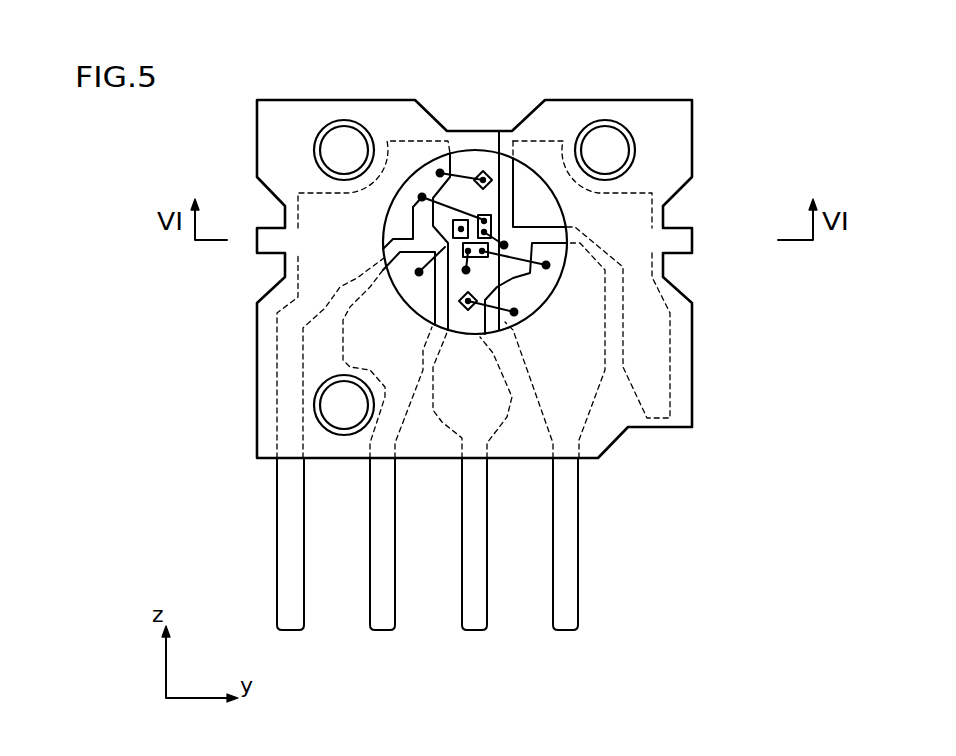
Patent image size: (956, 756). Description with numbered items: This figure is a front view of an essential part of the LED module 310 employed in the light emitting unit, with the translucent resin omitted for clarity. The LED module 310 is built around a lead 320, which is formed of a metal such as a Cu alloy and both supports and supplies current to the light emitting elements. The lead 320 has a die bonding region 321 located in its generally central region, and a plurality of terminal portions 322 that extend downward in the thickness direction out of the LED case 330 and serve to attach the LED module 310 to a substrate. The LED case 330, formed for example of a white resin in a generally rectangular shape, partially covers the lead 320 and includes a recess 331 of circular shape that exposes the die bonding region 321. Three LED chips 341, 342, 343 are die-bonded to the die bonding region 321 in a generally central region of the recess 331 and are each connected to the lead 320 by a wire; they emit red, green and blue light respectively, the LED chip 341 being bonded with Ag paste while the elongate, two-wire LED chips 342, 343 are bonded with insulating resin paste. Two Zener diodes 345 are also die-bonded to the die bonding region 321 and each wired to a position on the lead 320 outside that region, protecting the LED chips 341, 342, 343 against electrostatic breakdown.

The LED module 310 is at (258, 94).
The lead 320 is at (656, 286).
The die bonding region 321 is at (493, 272).
The terminal portions 322 is at (565, 613).
The LED case 330 is at (618, 108).
The recess 331 is at (420, 183).
The LED chip 341 is at (460, 224).
The LED chip 342 is at (491, 221).
The LED chip 343 is at (488, 252).
The Zener diodes 345 is at (485, 171).